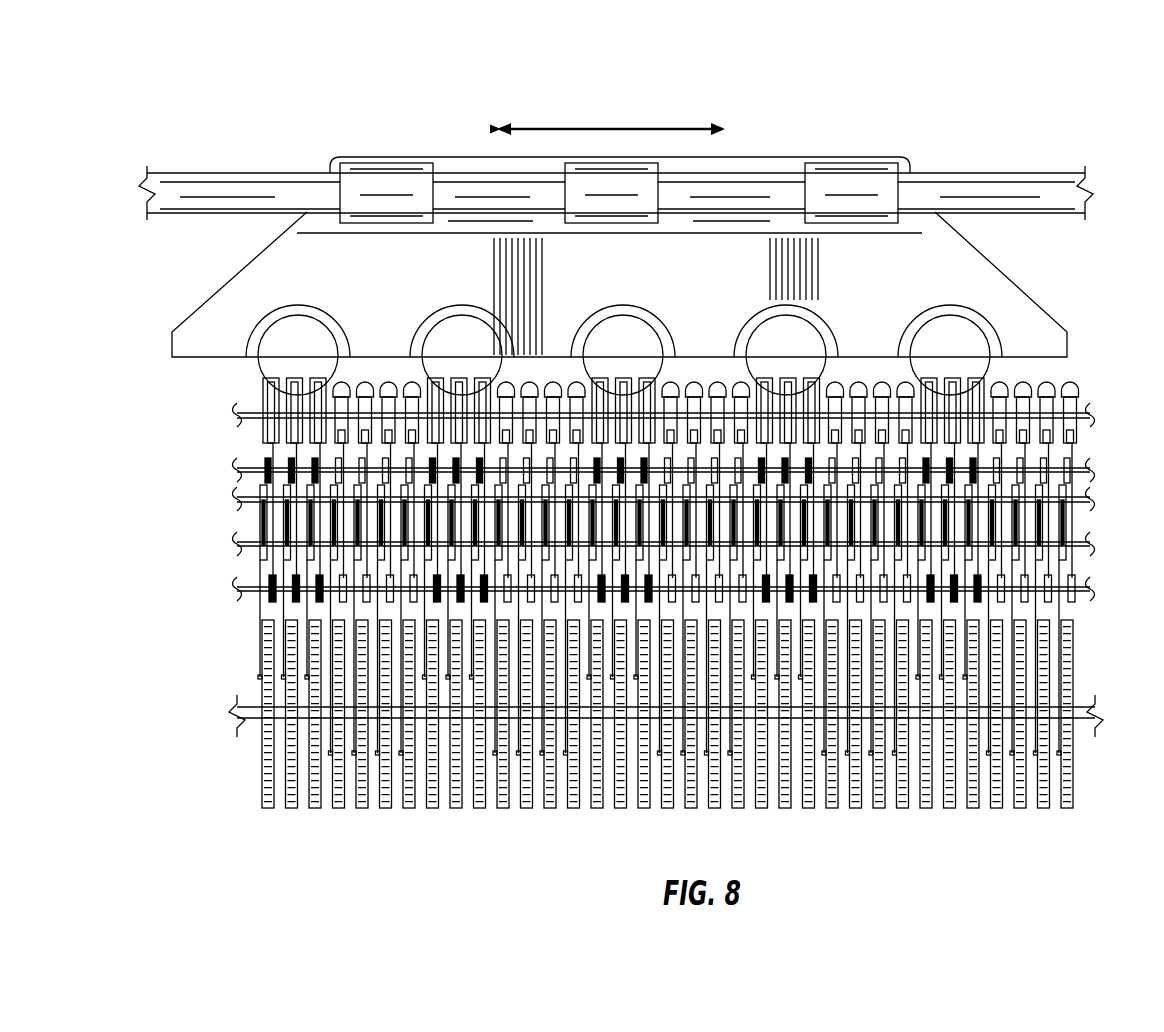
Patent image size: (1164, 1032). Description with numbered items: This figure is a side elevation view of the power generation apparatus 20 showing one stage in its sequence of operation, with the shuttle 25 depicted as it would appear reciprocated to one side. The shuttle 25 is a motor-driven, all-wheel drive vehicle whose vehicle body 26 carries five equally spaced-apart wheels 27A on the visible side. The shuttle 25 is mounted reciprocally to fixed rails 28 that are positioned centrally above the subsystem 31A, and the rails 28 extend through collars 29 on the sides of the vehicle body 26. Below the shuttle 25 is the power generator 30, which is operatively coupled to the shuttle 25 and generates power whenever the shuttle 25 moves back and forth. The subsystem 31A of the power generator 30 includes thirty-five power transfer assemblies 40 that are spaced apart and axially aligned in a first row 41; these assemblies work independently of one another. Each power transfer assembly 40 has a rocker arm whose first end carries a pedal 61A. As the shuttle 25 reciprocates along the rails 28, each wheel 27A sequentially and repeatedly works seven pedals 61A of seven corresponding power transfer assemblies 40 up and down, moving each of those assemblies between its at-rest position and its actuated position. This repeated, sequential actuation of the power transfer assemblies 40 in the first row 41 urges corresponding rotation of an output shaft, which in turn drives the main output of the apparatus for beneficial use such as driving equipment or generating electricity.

The power generation apparatus 20 is at (940, 140).
The shuttle 25 is at (752, 155).
The vehicle body 26 is at (963, 262).
The wheels 27A is at (290, 342).
The rails 28 is at (1013, 186).
The collars 29 is at (390, 178).
The power generator 30 is at (1076, 362).
The subsystem 31A is at (1100, 415).
The power transfer assemblies 40 is at (478, 814).
The first row 41 is at (1126, 550).
The pedal 61A is at (320, 382).